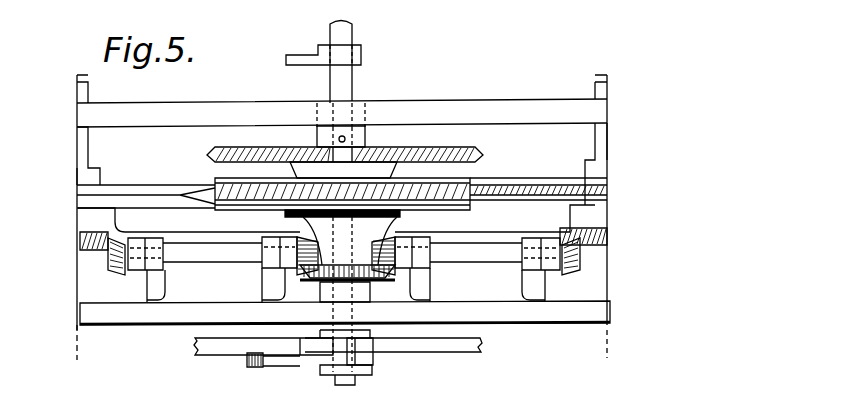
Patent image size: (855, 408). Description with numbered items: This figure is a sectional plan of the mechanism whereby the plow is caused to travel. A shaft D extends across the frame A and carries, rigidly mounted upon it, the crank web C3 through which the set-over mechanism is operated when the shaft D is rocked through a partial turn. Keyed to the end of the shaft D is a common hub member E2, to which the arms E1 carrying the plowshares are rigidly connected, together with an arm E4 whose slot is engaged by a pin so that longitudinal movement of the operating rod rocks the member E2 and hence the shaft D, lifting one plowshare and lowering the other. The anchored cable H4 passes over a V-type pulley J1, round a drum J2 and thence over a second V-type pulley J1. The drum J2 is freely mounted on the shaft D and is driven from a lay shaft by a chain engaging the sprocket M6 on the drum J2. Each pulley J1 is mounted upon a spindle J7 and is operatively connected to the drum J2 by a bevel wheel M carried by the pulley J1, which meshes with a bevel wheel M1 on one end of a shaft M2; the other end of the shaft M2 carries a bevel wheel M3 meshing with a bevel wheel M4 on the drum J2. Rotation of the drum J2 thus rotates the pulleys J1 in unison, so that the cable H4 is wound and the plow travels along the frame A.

The frame A is at (402, 116).
The shaft D is at (345, 34).
The crank web C3 is at (305, 58).
The sprocket M6 is at (470, 150).
The V-type pulley J1 is at (148, 186).
The anchored cable H4 is at (548, 190).
The spindle J7 is at (86, 145).
The drum J2 is at (248, 212).
The bevel wheel M is at (80, 240).
The bevel wheel M1 is at (108, 256).
The shaft M2 is at (198, 255).
The bevel wheel M3 is at (297, 252).
The bevel wheel M4 is at (382, 268).
The arm E1 is at (214, 345).
The arm E4 is at (266, 360).
The hub member E2 is at (366, 360).